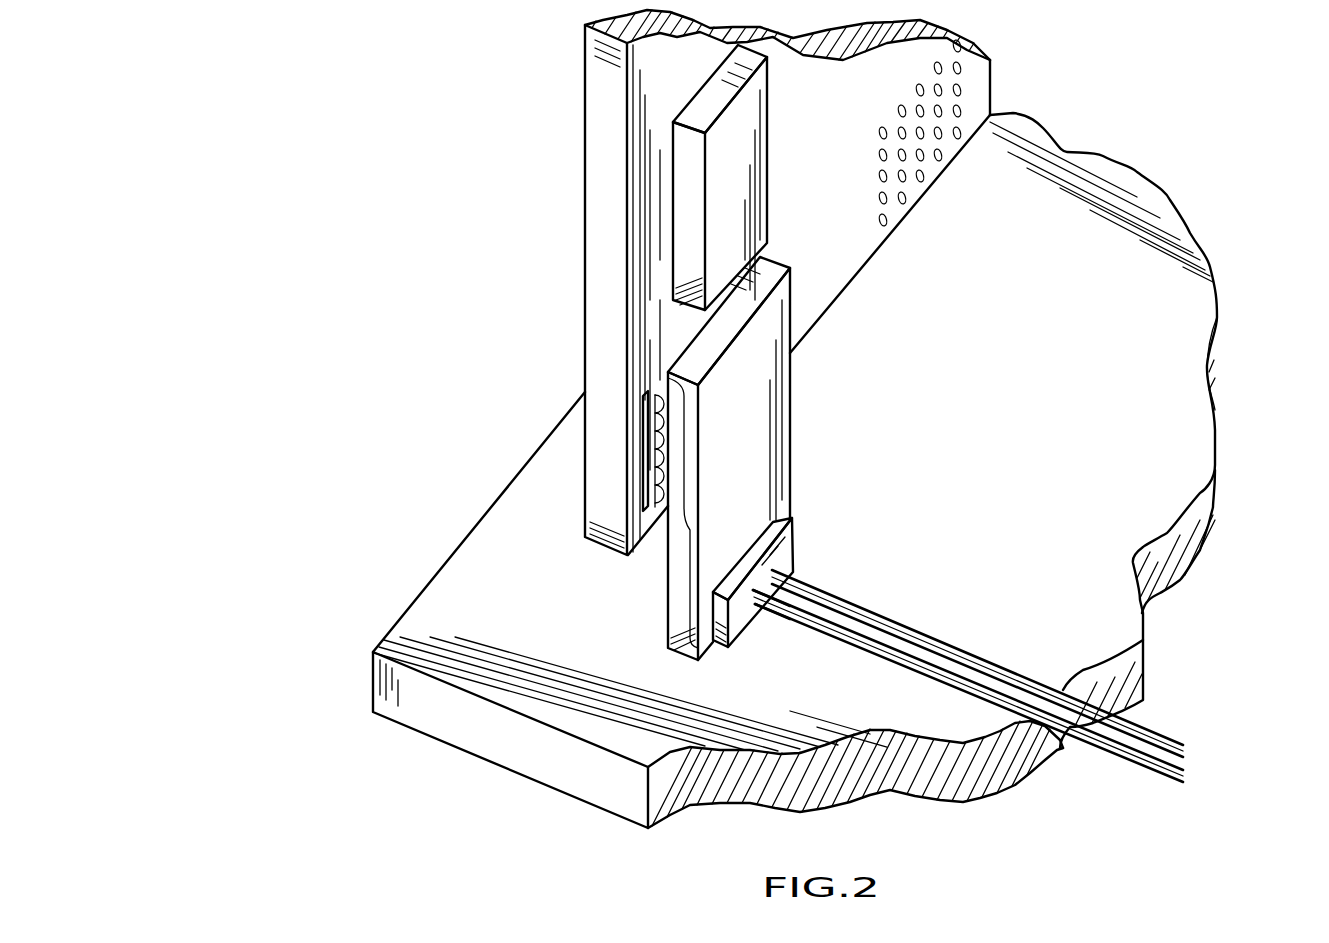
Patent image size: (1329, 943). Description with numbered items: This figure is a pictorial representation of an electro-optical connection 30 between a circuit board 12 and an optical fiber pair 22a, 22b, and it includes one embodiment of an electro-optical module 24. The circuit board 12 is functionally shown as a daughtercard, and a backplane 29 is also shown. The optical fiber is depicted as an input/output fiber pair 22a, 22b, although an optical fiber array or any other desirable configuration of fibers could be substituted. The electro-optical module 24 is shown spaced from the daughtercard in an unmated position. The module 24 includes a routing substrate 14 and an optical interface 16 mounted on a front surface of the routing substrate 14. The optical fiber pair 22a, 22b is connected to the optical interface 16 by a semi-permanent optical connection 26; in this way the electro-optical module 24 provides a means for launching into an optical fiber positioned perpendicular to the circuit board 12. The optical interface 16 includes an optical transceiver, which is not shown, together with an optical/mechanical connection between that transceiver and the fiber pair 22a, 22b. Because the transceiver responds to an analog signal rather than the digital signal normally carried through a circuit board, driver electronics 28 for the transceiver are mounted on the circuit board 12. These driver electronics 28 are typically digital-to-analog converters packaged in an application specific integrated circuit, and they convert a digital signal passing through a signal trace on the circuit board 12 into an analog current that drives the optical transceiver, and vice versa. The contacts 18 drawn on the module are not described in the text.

The electro-optical connection 30 is at (358, 147).
The circuit board 12 is at (605, 205).
The backplane 29 is at (415, 633).
The driver electronics 28 is at (703, 112).
The routing substrate 14 is at (687, 360).
The electro-optical module 24 is at (680, 520).
The connector pins / contacts 18 is at (645, 453).
The optical interface 16 is at (720, 638).
The semi-permanent optical connection 26 is at (757, 603).
The optical fiber 22b is at (1187, 763).
The optical fiber 22a is at (1187, 766).